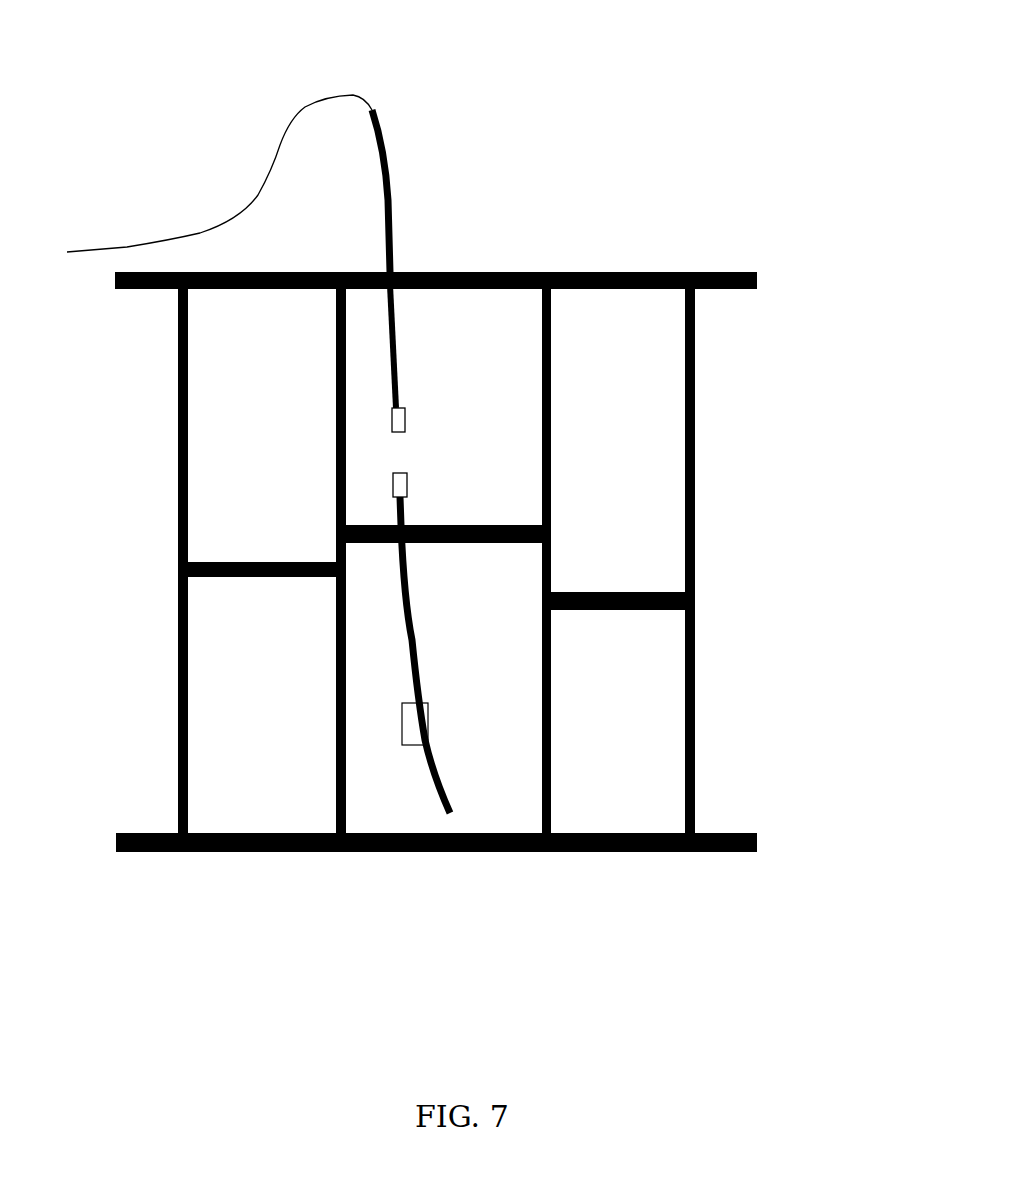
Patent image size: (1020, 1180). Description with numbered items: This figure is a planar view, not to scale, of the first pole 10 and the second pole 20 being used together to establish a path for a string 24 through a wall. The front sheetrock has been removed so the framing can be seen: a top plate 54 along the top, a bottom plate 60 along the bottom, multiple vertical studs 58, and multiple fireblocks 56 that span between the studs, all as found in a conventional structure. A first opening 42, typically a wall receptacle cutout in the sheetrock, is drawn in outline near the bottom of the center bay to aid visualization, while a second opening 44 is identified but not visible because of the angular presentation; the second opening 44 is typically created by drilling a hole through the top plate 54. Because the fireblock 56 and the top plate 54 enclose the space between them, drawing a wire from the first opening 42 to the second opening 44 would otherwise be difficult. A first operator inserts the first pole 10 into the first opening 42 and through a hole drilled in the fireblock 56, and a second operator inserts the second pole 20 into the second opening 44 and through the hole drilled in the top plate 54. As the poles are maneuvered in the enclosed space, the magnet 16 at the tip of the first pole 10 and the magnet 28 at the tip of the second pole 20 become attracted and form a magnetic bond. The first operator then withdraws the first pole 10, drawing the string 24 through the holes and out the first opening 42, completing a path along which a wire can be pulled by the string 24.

The first pole 10 is at (453, 780).
The magnet 16 is at (407, 483).
The second pole 20 is at (405, 183).
The string 24 is at (295, 105).
The magnet 28 is at (407, 408).
The first opening 42 is at (393, 735).
The second opening 44 is at (398, 268).
The top plate 54 is at (657, 265).
The fireblock 56 is at (227, 587).
The stud 58 is at (698, 394).
The bottom plate 60 is at (672, 860).